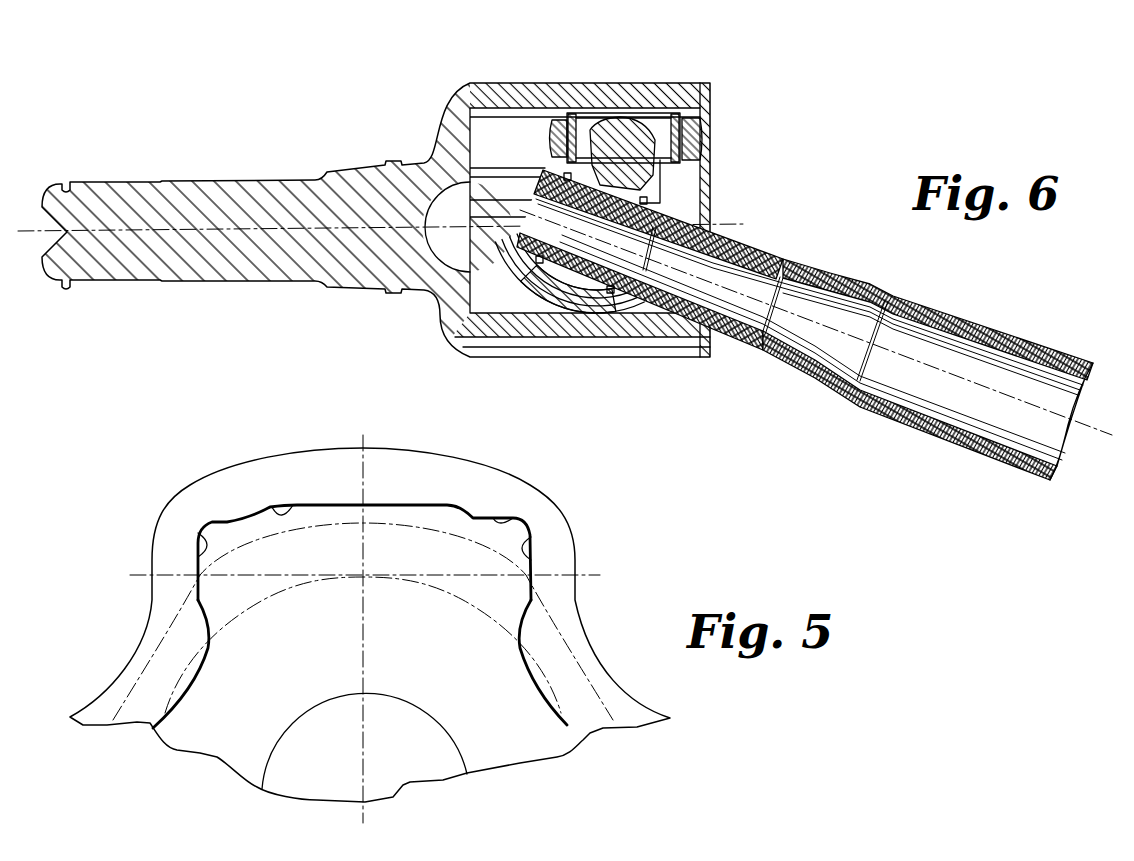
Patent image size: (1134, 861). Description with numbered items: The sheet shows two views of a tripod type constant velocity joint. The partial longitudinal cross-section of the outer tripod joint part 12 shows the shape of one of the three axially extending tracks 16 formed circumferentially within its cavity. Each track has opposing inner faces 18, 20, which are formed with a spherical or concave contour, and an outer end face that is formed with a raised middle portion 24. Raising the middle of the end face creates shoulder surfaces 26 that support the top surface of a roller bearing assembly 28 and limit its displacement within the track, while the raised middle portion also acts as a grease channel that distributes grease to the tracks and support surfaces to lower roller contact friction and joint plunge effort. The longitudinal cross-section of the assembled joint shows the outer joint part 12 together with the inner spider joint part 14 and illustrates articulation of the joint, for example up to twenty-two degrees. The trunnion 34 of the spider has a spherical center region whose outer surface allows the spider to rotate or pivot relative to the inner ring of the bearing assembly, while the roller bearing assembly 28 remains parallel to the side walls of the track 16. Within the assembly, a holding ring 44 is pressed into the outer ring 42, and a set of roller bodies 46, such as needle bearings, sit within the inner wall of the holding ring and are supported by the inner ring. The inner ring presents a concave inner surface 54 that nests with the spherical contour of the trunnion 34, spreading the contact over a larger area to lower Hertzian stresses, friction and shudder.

In FIG. 6, the outer tripod joint part 12 is at (459, 78).
In FIG. 5, the outer tripod joint part 12 is at (516, 472).
In FIG. 6, the inner spider joint part 14 is at (643, 192).
In FIG. 6, the tracks 16 is at (514, 153).
In FIG. 5, the tracks 16 is at (325, 641).
In FIG. 5, the inner face 18 is at (205, 533).
In FIG. 5, the inner face 20 is at (522, 547).
In FIG. 5, the raised middle portion 24 is at (270, 507).
In FIG. 5, the shoulder surfaces 26 is at (225, 518).
In FIG. 6, the roller bearing assembly 28 is at (500, 300).
In FIG. 6, the trunnion 34 is at (624, 146).
In FIG. 6, the outer ring 42 is at (552, 128).
In FIG. 6, the holding ring 44 is at (568, 116).
In FIG. 6, the roller bodies 46 is at (588, 118).
In FIG. 6, the concave inner surface 54 is at (654, 130).